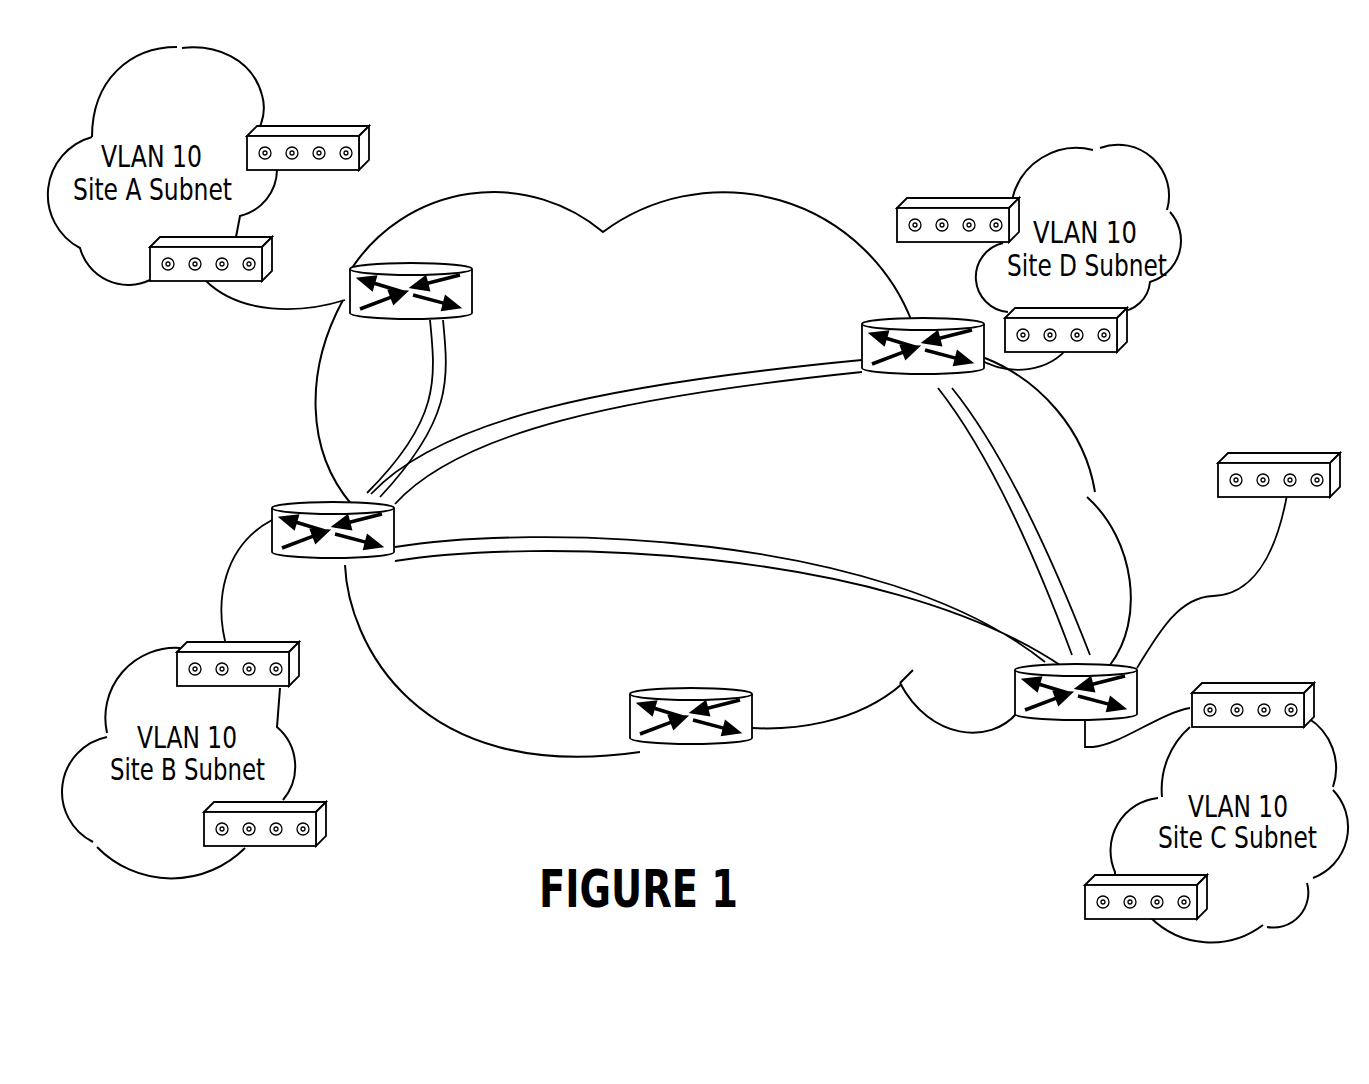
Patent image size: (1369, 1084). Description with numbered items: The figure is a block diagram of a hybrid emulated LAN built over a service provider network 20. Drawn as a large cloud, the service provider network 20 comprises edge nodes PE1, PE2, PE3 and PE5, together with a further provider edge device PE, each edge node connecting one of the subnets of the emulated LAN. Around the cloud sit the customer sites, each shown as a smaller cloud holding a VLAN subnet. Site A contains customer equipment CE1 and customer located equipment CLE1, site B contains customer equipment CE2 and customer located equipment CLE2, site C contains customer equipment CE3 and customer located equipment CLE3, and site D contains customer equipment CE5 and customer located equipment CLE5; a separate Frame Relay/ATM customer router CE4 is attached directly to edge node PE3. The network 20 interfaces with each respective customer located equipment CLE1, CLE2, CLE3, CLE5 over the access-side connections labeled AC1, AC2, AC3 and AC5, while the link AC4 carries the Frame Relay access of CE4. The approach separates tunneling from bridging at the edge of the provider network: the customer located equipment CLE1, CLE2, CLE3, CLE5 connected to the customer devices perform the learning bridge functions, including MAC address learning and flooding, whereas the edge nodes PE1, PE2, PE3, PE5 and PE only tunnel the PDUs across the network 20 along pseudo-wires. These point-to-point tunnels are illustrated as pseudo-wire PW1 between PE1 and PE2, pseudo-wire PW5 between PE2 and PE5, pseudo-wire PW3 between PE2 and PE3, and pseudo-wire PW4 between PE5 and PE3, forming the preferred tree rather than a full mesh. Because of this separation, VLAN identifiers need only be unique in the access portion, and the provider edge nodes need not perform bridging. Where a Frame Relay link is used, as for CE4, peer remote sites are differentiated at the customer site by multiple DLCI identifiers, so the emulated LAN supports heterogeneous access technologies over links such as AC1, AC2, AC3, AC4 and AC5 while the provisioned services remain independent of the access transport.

The service provider network 20 is at (684, 459).
The edge node PE1 is at (411, 313).
The edge node PE2 is at (333, 554).
The edge node PE3 is at (1042, 681).
The edge node PE5 is at (896, 345).
The provider edge device PE is at (691, 699).
The customer equipment CE1 is at (315, 123).
The customer equipment CE2 is at (294, 827).
The customer equipment CE3 is at (1120, 898).
The customer equipment CE4 is at (1279, 436).
The customer equipment CE5 is at (958, 192).
The customer located equipment CLE1 is at (211, 295).
The customer located equipment CLE2 is at (273, 673).
The customer located equipment CLE3 is at (1257, 685).
The customer located equipment CLE5 is at (1108, 328).
The pseudo-wire PW1 is at (439, 408).
The pseudo-wire PW3 is at (727, 588).
The pseudo-wire PW4 is at (1001, 521).
The pseudo-wire PW5 is at (616, 421).
The attachment circuit AC1 is at (284, 312).
The attachment circuit AC2 is at (215, 568).
The attachment circuit AC3 is at (1085, 747).
The attachment circuit AC4 is at (1217, 595).
The attachment circuit AC5 is at (1035, 372).